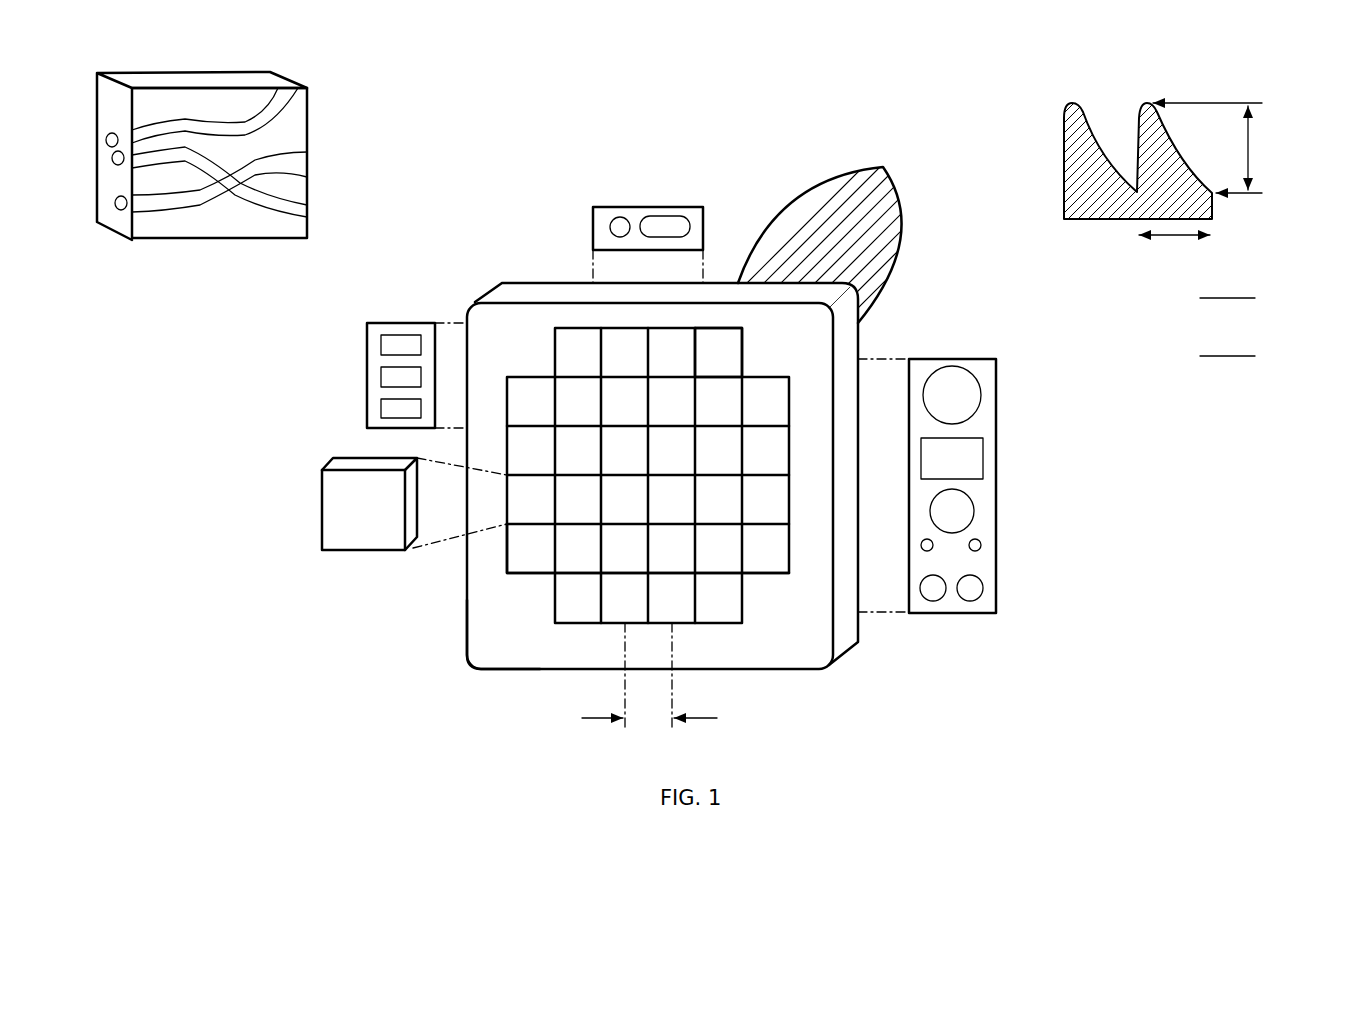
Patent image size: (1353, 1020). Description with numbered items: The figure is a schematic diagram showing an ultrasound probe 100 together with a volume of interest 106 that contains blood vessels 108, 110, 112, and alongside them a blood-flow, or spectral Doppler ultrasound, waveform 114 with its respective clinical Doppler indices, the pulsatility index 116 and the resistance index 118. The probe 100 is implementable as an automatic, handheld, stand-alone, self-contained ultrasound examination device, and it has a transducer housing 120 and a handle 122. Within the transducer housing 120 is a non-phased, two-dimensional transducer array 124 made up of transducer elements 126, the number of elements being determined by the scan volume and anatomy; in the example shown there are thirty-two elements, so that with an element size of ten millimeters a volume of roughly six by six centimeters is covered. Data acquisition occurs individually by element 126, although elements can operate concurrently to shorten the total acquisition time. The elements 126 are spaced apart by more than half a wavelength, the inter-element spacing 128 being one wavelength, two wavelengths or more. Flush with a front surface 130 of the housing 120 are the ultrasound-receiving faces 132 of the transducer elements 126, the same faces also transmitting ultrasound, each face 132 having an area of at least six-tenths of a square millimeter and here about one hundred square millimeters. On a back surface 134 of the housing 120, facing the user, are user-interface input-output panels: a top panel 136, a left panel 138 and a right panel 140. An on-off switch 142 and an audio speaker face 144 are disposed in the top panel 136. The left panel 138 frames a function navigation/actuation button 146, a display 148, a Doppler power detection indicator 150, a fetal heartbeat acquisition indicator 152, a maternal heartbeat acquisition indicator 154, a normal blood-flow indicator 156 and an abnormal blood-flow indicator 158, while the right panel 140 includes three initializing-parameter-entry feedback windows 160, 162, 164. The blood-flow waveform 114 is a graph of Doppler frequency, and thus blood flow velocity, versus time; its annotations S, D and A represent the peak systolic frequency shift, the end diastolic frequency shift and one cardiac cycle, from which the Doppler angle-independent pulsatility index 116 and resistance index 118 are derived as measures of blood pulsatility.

The ultrasound probe 100 is at (316, 623).
The volume of interest 106 is at (197, 238).
The blood vessel 108 is at (290, 97).
The blood vessel 110 is at (288, 216).
The blood vessel 112 is at (292, 160).
The blood-flow waveform 114 is at (1085, 108).
The pulsatility index 116 is at (1263, 289).
The resistance index 118 is at (1263, 346).
The transducer housing 120 is at (511, 669).
The handle 122 is at (902, 232).
The two-dimensional transducer array 124 is at (756, 582).
The transducer element 126 is at (531, 573).
The inter-element spacing 128 is at (732, 707).
The front surface 130 is at (483, 653).
The ultrasound-receiving face 132 is at (330, 517).
The back surface 134 is at (523, 300).
The top panel 136 is at (592, 216).
The left panel 138 is at (956, 357).
The right panel 140 is at (401, 322).
The on-off switch 142 is at (618, 216).
The audio speaker face 144 is at (666, 214).
The function navigation/actuation button 146 is at (980, 395).
The display 148 is at (983, 460).
The Doppler power detection indicator 150 is at (975, 511).
The fetal heartbeat acquisition indicator 152 is at (935, 546).
The maternal heartbeat acquisition indicator 154 is at (982, 545).
The normal blood-flow indicator 156 is at (932, 601).
The abnormal blood-flow indicator 158 is at (971, 601).
The initializing-parameter-entry feedback window 160 is at (381, 345).
The initializing-parameter-entry feedback window 162 is at (381, 377).
The initializing-parameter-entry feedback window 164 is at (381, 408).